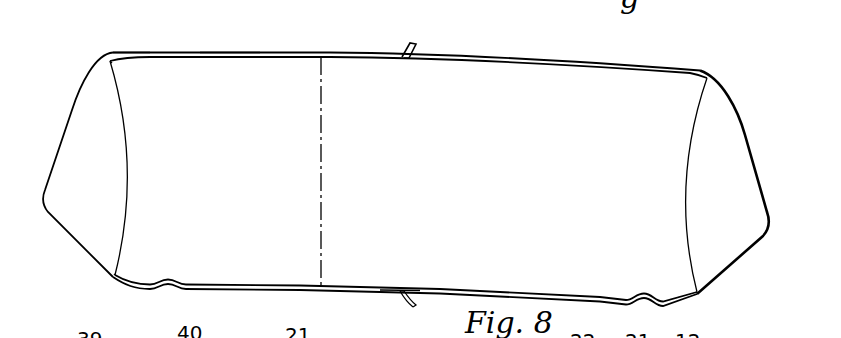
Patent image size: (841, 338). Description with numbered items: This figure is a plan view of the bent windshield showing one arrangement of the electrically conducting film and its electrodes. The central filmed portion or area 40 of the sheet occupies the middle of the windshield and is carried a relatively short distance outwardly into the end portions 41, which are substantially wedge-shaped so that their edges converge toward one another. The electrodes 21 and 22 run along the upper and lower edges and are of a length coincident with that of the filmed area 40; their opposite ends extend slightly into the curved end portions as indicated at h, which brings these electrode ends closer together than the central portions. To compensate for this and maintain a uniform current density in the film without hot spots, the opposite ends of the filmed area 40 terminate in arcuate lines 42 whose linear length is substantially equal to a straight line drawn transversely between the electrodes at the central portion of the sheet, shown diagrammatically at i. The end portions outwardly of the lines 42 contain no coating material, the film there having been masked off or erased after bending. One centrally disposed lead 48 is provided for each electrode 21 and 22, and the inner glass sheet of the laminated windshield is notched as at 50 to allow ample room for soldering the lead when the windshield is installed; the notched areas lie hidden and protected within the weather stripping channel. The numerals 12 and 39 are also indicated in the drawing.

The panel / body section 12 is at (403, 286).
The electrode 21 is at (262, 52).
The electrode 22 is at (223, 288).
The upper surface 39 is at (149, 50).
The central filmed portion 40 is at (230, 137).
The end portion 41 is at (82, 138).
The arcuate line 42 is at (125, 190).
The lead 48 is at (415, 45).
The notch 50 is at (410, 62).
The electrode end h is at (110, 62).
The transverse straight line i is at (323, 163).